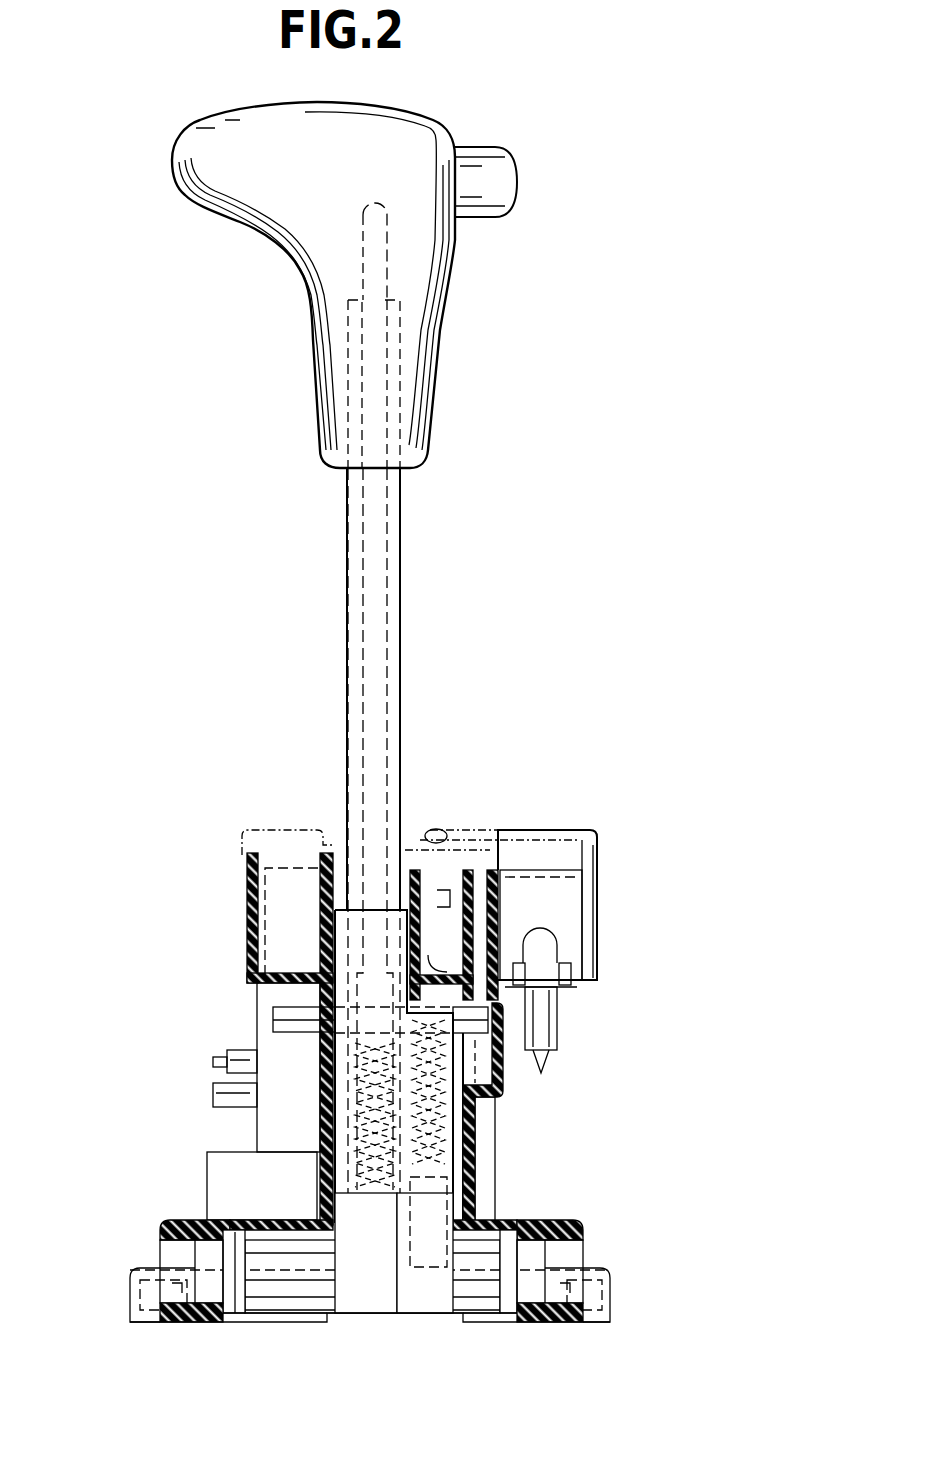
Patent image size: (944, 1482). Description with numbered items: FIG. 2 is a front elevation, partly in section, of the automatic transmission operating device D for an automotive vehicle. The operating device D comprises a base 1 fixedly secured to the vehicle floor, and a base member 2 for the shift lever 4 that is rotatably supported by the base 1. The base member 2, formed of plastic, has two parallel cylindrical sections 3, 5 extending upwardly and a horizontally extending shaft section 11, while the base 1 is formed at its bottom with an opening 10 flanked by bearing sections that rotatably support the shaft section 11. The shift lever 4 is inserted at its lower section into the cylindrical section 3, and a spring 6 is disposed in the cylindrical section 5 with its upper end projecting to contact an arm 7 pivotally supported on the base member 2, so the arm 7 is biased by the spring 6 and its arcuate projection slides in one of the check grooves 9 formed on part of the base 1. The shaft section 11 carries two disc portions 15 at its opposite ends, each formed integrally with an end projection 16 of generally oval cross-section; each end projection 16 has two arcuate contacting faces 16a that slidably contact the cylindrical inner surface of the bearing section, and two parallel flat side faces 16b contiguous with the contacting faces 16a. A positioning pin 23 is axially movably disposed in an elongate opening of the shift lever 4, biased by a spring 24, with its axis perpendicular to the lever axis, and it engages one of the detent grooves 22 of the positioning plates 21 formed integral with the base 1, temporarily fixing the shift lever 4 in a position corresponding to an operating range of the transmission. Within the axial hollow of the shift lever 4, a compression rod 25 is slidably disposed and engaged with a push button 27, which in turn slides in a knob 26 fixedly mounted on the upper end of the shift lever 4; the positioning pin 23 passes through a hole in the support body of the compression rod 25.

The base 1 is at (573, 1215).
The base member 2 is at (383, 1318).
The cylindrical section 3 is at (360, 1255).
The shift lever 4 is at (400, 650).
The cylindrical section 5 is at (430, 1255).
The spring 6 is at (430, 1152).
The arm 7 is at (428, 988).
The check grooves 9 is at (450, 972).
The opening 10 is at (275, 1315).
The shaft section 11 is at (305, 1320).
The disc portions 15 is at (233, 1245).
The end projection 16 is at (182, 1286).
The contacting faces 16a is at (200, 1315).
The flat side faces 16b is at (207, 1258).
The positioning plates 21 is at (318, 1140).
The detent grooves 22 is at (320, 1062).
The positioning pin 23 is at (285, 1020).
The spring 24 is at (372, 1112).
The compression rod 25 is at (376, 737).
The knob 26 is at (437, 357).
The push button 27 is at (517, 187).
The automatic transmission operating device D is at (585, 510).